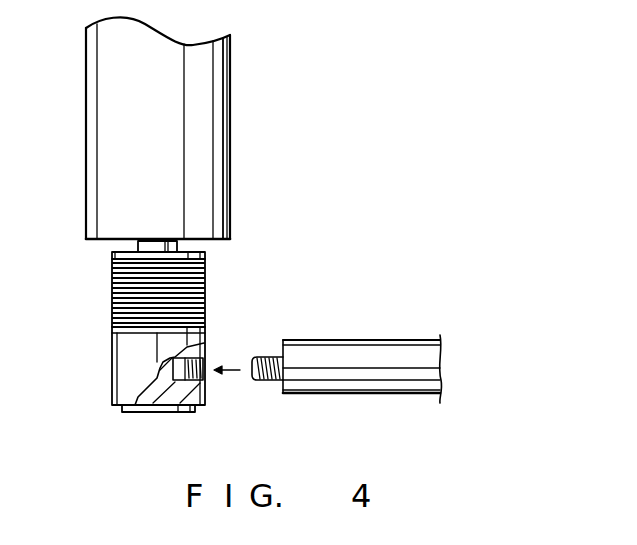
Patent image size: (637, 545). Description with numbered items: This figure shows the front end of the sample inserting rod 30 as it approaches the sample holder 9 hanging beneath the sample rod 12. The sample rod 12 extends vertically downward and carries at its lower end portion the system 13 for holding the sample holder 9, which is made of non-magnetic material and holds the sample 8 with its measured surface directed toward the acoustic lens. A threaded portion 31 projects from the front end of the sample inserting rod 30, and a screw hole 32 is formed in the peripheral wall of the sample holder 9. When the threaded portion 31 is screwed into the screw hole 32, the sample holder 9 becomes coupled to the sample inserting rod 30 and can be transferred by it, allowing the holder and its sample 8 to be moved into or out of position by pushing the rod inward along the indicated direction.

The sample rod 12 is at (230, 112).
The system for holding sample holder 13 is at (206, 283).
The sample holder 9 is at (122, 363).
The sample 8 is at (113, 408).
The screw hole 32 is at (200, 382).
The threaded portion 31 is at (264, 357).
The sample inserting rod 30 is at (393, 340).